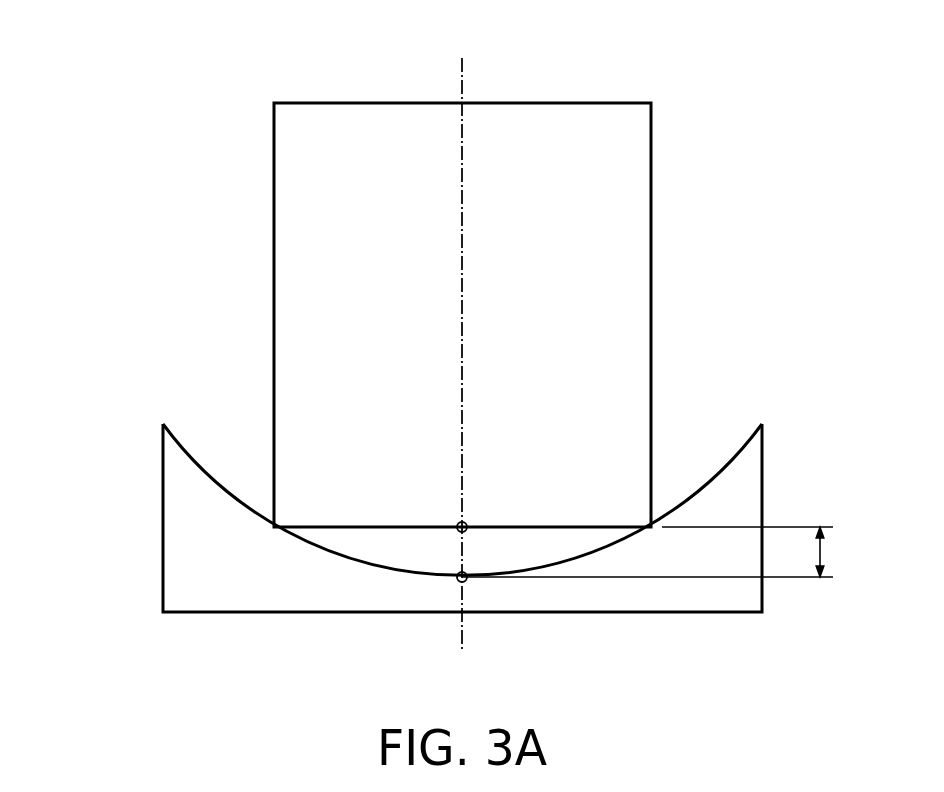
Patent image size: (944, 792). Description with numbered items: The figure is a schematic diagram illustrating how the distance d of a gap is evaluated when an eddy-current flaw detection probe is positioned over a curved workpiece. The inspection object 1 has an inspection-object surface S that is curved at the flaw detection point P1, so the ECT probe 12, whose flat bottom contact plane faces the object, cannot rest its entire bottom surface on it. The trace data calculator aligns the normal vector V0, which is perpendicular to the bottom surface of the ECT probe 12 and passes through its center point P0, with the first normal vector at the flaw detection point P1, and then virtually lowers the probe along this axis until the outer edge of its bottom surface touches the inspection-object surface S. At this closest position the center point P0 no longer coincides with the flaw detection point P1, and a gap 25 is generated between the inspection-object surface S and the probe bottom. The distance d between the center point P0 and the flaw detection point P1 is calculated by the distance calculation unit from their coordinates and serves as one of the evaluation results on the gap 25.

The inspection object 1 is at (413, 518).
The ECT probe 12 is at (652, 250).
The gap 25 is at (393, 548).
The center point P0 is at (457, 525).
The flaw detection point P1 is at (457, 578).
The inspection-object surface S is at (738, 455).
The distance d is at (655, 552).
The normal vector V0 is at (460, 82).